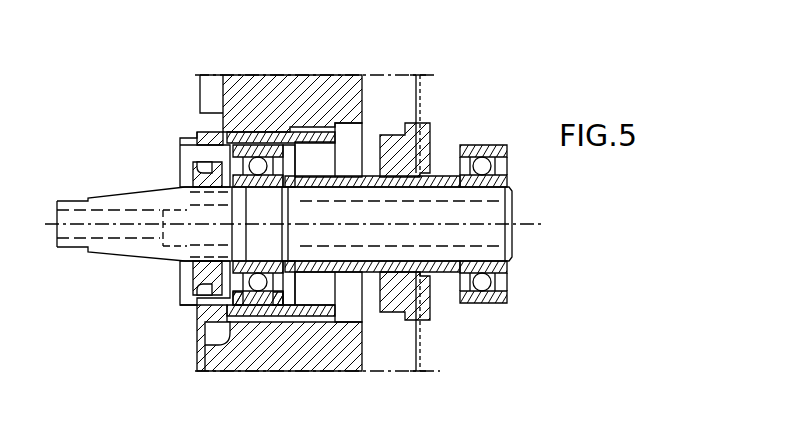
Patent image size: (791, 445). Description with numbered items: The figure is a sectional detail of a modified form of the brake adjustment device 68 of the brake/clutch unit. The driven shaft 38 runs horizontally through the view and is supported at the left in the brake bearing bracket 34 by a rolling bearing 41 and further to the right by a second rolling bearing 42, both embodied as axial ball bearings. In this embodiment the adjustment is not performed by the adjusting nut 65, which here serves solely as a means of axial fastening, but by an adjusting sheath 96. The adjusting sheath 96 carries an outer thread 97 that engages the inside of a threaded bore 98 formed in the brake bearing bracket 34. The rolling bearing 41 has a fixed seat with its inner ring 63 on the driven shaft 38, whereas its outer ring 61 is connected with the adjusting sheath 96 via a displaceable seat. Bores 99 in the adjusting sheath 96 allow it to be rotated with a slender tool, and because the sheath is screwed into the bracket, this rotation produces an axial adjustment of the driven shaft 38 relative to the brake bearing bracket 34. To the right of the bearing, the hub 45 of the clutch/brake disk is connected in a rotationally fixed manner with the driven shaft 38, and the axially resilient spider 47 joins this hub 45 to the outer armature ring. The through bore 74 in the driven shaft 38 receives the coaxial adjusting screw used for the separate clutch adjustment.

The brake bearing bracket 34 is at (255, 93).
The threaded bore 98 is at (307, 127).
The outer thread 97 is at (343, 140).
The axially resilient spider 47 is at (422, 93).
The hub 45 is at (447, 175).
The bores 99 is at (213, 138).
The adjusting sheath 96 is at (183, 143).
The adjusting nut 65 is at (193, 177).
The driven shaft 38 is at (122, 208).
The through bore 74 is at (492, 230).
The brake adjustment device 68 is at (156, 283).
The outer ring 61 is at (245, 293).
The rolling bearing 41 is at (258, 306).
The inner ring 63 is at (277, 293).
The rolling bearing 42 is at (482, 302).